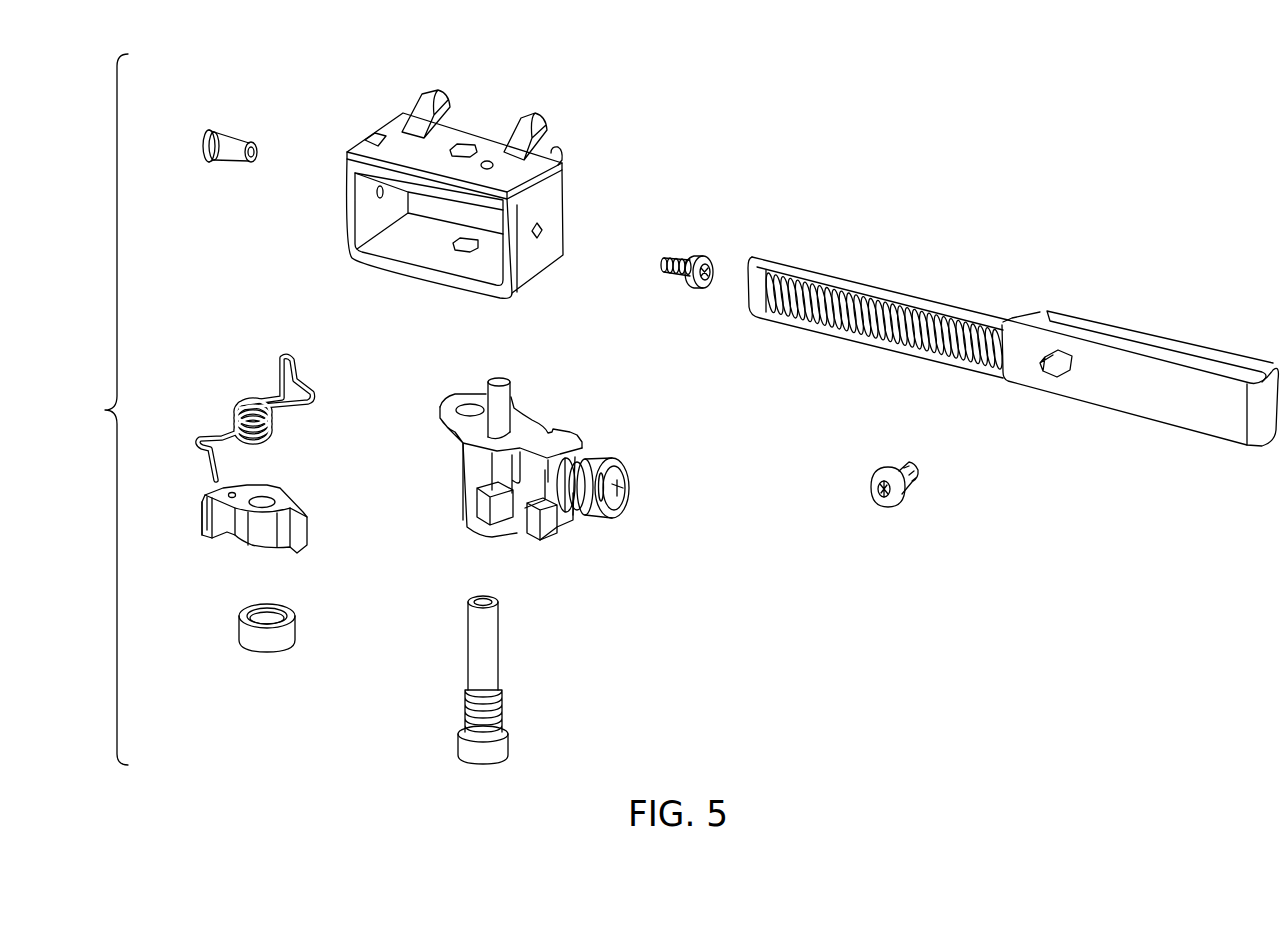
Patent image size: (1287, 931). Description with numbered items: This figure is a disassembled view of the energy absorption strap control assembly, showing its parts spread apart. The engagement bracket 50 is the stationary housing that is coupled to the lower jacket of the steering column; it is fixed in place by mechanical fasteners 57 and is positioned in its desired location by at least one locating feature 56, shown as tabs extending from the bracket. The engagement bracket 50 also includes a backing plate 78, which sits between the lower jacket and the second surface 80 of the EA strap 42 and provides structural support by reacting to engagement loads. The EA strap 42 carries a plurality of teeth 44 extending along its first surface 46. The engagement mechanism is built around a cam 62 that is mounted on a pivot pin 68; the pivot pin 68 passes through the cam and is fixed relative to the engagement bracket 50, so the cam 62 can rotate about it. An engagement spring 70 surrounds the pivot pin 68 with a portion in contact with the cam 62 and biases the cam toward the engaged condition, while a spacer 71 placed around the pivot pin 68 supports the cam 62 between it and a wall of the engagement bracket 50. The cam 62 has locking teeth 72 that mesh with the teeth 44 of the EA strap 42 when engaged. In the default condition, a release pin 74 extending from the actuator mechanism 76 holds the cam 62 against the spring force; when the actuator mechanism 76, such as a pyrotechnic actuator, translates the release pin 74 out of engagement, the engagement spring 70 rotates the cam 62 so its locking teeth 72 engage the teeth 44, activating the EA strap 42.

The EA strap 42 is at (1013, 333).
The teeth 44 is at (840, 322).
The first surface 46 is at (1017, 363).
The engagement bracket 50 is at (395, 133).
The locating feature 56 is at (430, 100).
The mechanical fasteners 57 is at (240, 142).
The cam 62 is at (287, 500).
The pivot pin 68 is at (487, 660).
The engagement spring 70 is at (240, 412).
The spacer 71 is at (290, 633).
The locking teeth 72 is at (210, 497).
The release pin 74 is at (508, 383).
The actuator mechanism 76 is at (575, 400).
The backing plate 78 is at (554, 158).
The second surface 80 is at (913, 297).